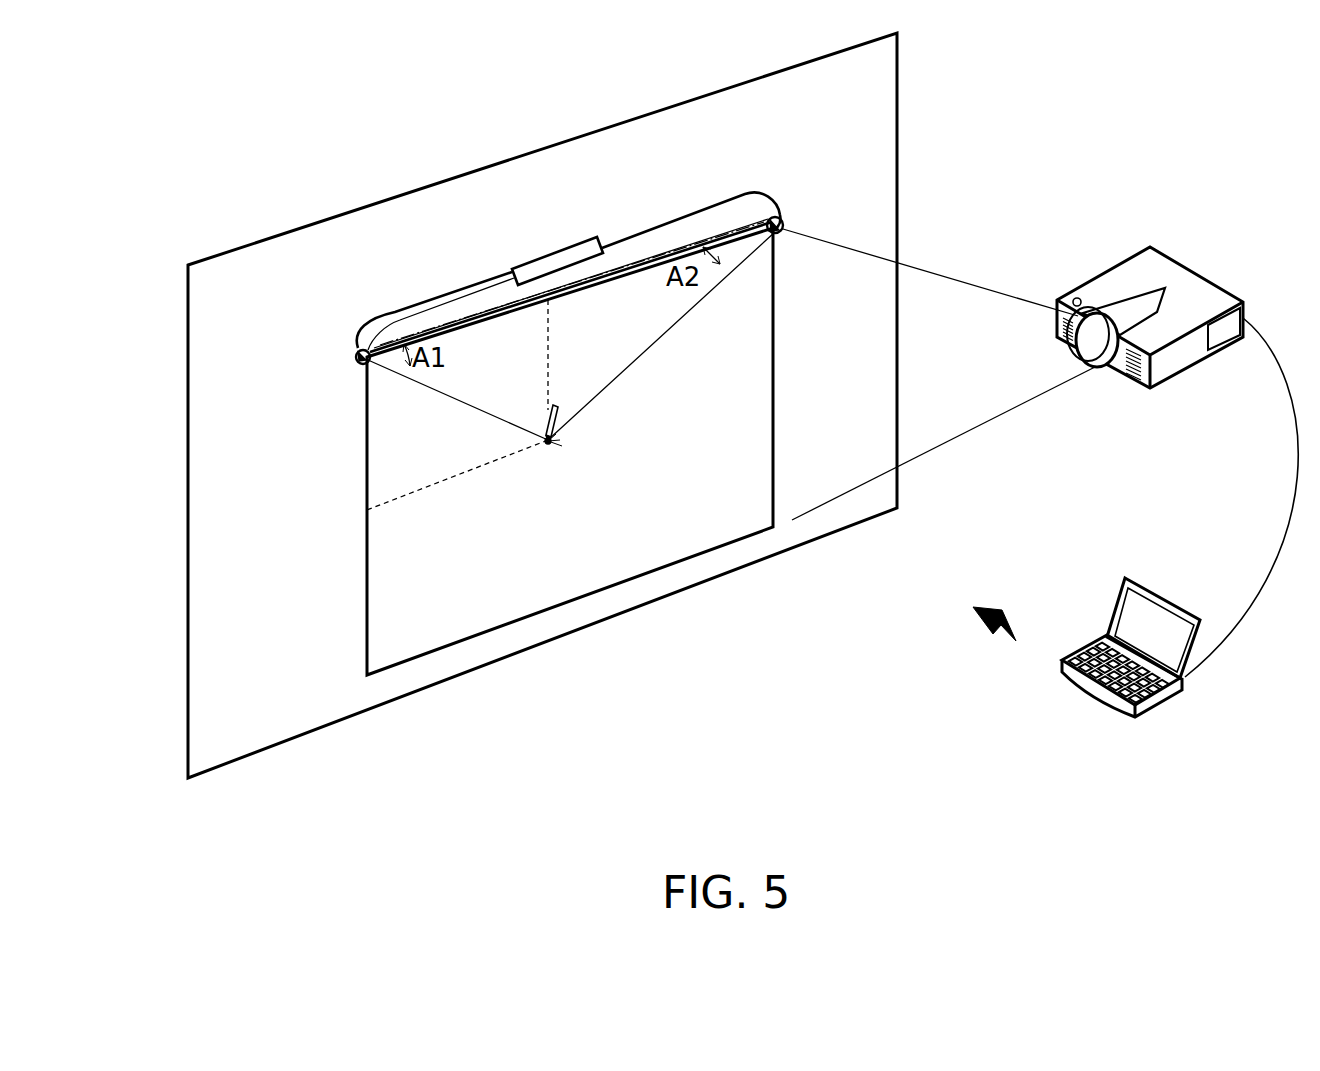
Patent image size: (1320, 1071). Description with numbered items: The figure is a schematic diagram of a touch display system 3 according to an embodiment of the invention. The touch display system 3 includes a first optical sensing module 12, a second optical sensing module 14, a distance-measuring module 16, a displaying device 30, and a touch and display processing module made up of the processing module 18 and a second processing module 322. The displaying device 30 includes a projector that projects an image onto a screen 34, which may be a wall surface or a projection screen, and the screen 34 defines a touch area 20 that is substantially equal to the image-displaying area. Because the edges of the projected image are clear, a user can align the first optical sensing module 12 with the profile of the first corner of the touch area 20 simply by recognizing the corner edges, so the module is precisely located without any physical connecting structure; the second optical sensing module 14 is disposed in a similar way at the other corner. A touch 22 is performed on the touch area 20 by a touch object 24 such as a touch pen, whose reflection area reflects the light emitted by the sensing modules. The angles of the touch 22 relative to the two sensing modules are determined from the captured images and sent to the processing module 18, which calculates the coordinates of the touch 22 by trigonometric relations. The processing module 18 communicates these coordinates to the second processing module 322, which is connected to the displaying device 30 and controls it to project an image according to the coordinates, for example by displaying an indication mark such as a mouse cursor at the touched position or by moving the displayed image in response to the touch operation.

The touch display system 3 is at (1188, 135).
The first optical sensing module 12 is at (352, 357).
The second optical sensing module 14 is at (786, 222).
The distance-measuring module 16 is at (360, 346).
The processing module 18 is at (556, 264).
The touch area 20 is at (535, 578).
The touch 22 is at (556, 440).
The touch object 24 is at (558, 410).
The displaying device 30 is at (1198, 297).
The screen 34 is at (320, 695).
The second processing module 322 is at (1182, 620).